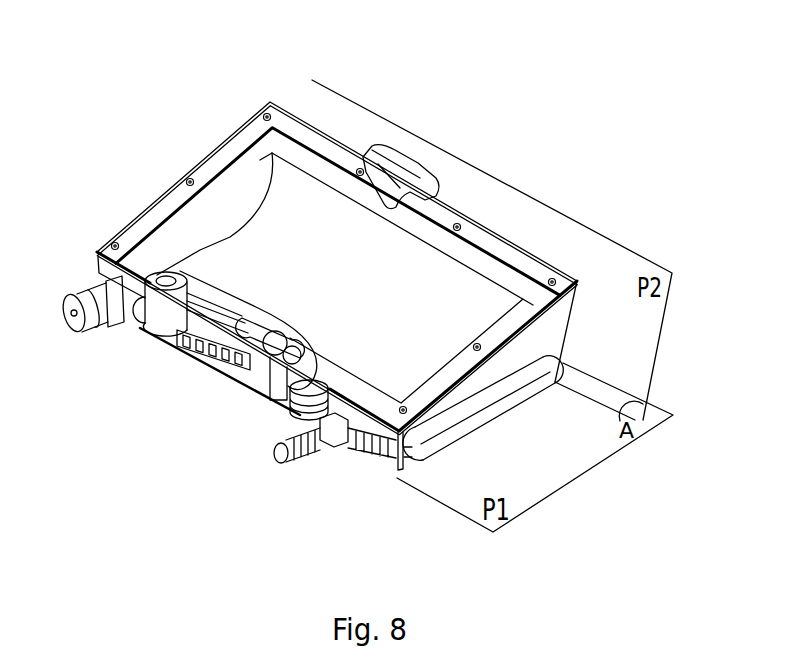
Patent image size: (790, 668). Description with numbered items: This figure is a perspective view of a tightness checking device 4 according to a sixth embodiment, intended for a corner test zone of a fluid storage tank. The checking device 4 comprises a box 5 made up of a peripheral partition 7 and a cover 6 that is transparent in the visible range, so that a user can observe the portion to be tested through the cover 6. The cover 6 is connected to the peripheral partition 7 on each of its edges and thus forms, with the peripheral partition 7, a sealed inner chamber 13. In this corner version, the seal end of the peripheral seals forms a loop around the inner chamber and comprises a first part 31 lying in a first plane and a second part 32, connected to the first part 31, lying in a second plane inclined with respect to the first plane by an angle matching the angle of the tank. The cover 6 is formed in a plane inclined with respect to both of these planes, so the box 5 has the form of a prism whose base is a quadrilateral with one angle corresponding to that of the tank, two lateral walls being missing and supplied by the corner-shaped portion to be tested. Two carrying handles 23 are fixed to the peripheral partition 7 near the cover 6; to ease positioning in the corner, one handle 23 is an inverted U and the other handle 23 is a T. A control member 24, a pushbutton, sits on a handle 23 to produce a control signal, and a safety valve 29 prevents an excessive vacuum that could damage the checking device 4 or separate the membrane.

The tightness checking device 4 is at (148, 158).
The box 5 is at (233, 184).
The cover 6 is at (273, 118).
The peripheral partition 7 is at (537, 333).
The inner chamber 13 is at (280, 258).
The carrying handles 23 is at (418, 165).
The control member 24 is at (268, 382).
The safety valve 29 is at (88, 320).
The first part 31 is at (405, 476).
The second part 32 is at (580, 283).